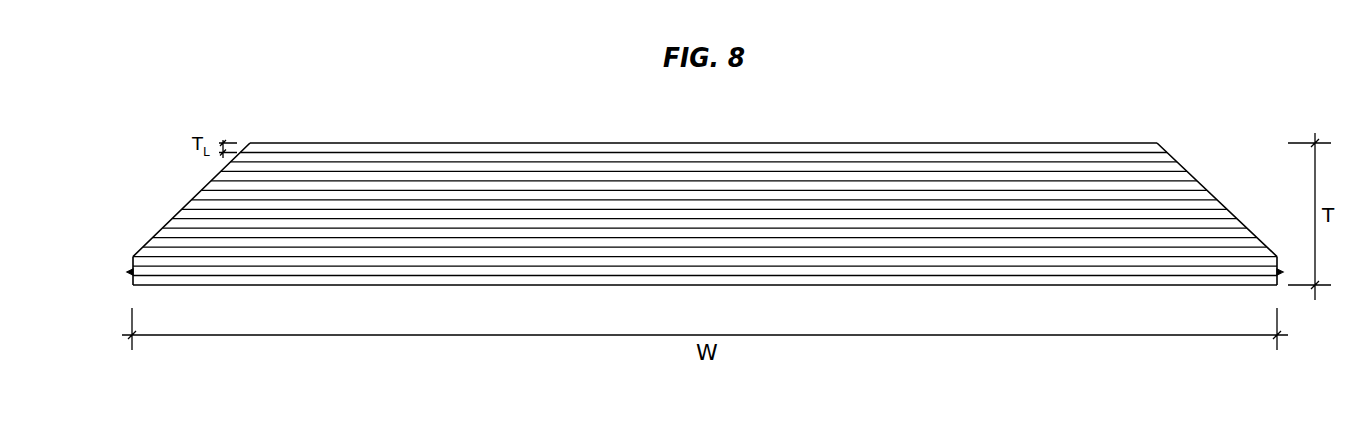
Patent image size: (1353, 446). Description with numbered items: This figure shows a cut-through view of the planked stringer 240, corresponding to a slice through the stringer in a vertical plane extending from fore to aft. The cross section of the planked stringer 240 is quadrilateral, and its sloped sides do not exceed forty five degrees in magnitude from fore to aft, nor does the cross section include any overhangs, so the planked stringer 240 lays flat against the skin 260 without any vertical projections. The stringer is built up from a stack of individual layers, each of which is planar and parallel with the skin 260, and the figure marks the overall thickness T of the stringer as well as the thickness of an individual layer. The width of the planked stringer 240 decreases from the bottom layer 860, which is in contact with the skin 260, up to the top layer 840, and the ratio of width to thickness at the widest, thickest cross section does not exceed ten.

The planked stringer 240 is at (112, 143).
The skin 260 is at (112, 257).
The top layer 840 is at (367, 143).
The bottom layer 860 is at (275, 286).